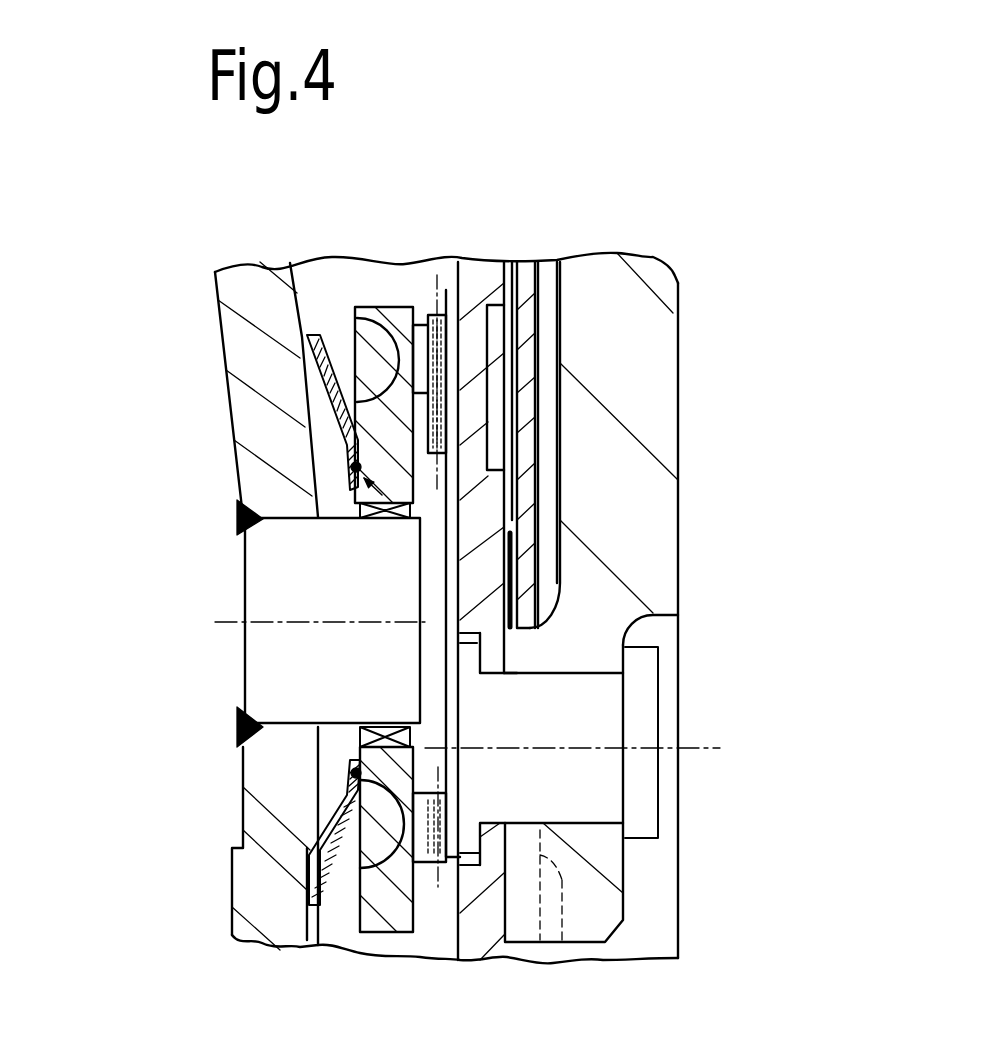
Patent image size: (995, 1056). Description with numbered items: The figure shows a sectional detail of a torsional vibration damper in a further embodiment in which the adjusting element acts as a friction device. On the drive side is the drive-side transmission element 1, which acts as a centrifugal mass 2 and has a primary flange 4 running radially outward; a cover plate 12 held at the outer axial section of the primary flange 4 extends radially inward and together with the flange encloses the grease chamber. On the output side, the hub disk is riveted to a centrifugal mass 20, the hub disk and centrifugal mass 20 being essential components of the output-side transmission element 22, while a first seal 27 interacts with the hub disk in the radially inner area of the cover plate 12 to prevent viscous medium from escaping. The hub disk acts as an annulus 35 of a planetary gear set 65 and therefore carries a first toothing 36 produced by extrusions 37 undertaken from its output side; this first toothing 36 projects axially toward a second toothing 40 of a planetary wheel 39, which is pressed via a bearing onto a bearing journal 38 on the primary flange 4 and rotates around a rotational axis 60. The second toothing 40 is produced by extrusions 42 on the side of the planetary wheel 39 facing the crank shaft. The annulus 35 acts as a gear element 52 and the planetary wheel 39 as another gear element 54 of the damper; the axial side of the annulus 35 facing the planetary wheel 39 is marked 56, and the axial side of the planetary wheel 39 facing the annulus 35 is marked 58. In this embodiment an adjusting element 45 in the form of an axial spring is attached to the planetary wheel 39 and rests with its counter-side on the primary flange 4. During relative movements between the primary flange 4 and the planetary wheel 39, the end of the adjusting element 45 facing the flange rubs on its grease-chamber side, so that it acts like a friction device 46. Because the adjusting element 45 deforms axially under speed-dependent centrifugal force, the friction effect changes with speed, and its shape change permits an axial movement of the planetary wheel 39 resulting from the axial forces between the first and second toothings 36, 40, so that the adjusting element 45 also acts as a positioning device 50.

The drive-side transmission element 1 is at (215, 282).
The centrifugal mass 2 is at (272, 262).
The primary flange 4 is at (268, 780).
The cover plate 12 is at (528, 278).
The centrifugal mass 20 is at (655, 253).
The output-side transmission element 22 is at (682, 297).
The first seal 27 is at (517, 563).
The annulus 35 is at (484, 518).
The first toothing 36 is at (452, 403).
The extrusions 37 is at (495, 368).
The bearing journal 38 is at (275, 565).
The planetary wheel 39 is at (350, 475).
The second toothing 40 is at (330, 335).
The extrusions 42 is at (310, 316).
The adjusting element 45 is at (315, 378).
The friction device 46 is at (335, 408).
The positioning device 50 is at (340, 447).
The gear element 52 is at (514, 553).
The gear element 54 is at (358, 504).
The axial side of the annulus 56 is at (503, 548).
The axial side of the planetary wheel 58 is at (508, 457).
The rotational axis 60 is at (224, 622).
The planetary gear set 65 is at (428, 288).